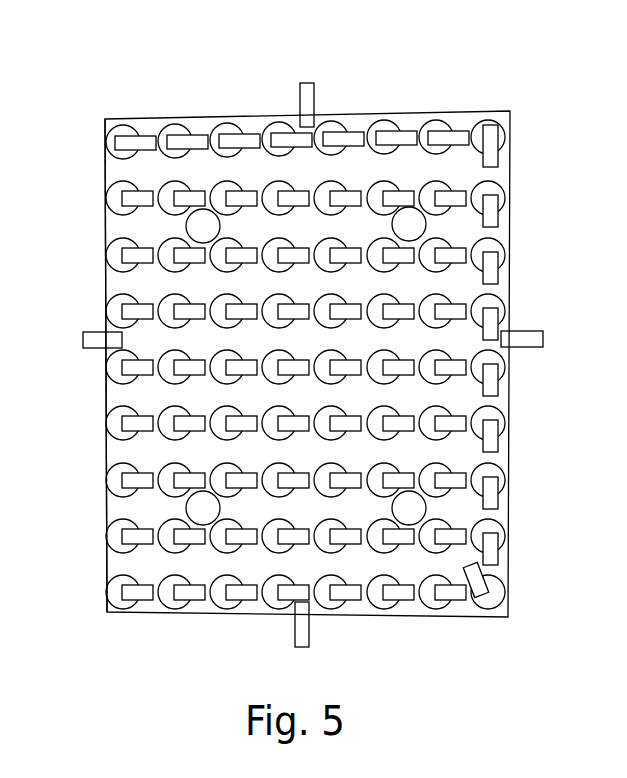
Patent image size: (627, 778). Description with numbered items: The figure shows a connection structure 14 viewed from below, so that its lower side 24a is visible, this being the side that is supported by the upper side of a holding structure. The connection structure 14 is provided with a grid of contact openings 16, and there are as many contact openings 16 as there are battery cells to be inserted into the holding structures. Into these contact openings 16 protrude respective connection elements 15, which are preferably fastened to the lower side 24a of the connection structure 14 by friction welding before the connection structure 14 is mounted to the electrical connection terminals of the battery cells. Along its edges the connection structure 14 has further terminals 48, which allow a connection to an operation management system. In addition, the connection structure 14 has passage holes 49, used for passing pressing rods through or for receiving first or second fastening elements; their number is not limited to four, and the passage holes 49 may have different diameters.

The connection structure 14 is at (203, 117).
The connection element 15 is at (441, 131).
The contact opening 16 is at (507, 130).
The further terminal 48 is at (307, 98).
The passage hole 49 is at (413, 517).
The lower side 24a is at (107, 513).